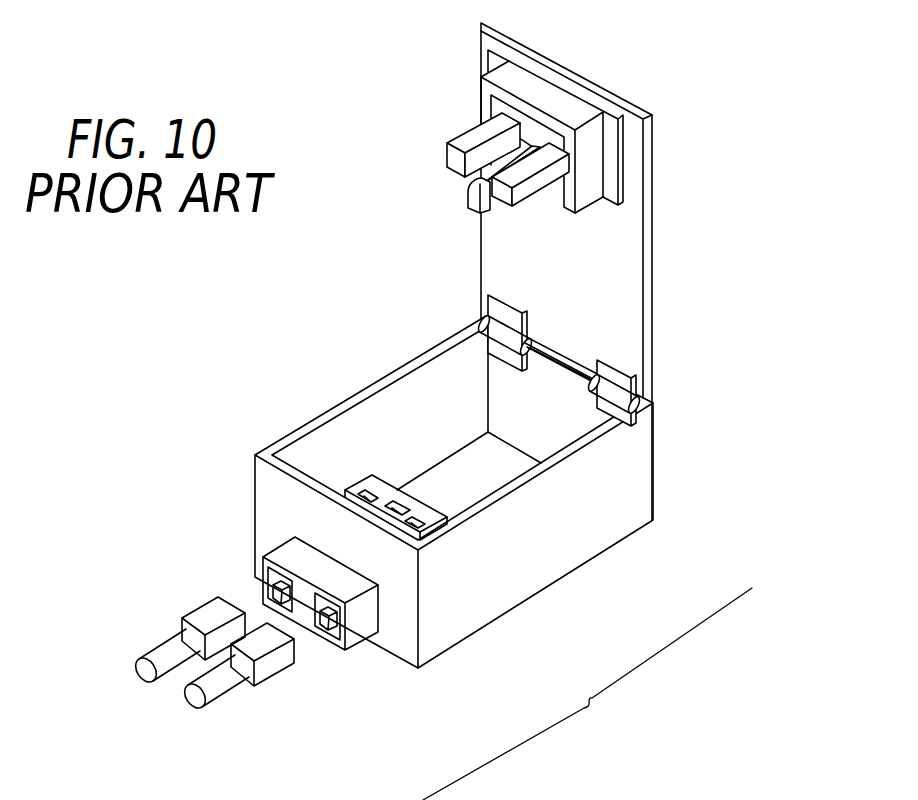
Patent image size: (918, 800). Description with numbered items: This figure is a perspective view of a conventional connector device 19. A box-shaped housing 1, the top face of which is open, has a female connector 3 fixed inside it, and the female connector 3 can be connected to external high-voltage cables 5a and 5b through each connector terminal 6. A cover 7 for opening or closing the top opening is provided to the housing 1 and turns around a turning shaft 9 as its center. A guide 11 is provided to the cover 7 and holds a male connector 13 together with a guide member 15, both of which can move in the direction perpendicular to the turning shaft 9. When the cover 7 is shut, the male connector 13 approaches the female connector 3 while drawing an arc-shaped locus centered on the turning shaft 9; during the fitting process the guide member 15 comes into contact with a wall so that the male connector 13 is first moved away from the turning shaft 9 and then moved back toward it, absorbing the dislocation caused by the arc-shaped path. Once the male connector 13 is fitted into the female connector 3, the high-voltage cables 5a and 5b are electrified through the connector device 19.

The housing 1 is at (467, 613).
The female connector 3 is at (378, 482).
The high-voltage cable 5a is at (160, 647).
The high-voltage cable 5b is at (220, 703).
The connector terminal 6 is at (327, 634).
The cover 7 is at (647, 255).
The turning shaft 9 is at (607, 392).
The guide 11 is at (557, 95).
The male connector 13 is at (440, 115).
The guide member 15 is at (468, 200).
The connector device 19 is at (702, 92).